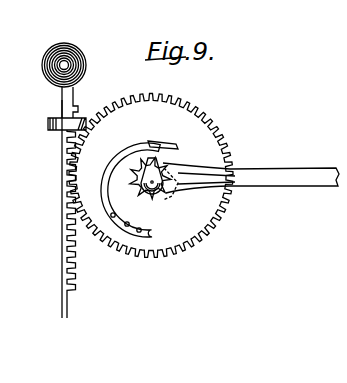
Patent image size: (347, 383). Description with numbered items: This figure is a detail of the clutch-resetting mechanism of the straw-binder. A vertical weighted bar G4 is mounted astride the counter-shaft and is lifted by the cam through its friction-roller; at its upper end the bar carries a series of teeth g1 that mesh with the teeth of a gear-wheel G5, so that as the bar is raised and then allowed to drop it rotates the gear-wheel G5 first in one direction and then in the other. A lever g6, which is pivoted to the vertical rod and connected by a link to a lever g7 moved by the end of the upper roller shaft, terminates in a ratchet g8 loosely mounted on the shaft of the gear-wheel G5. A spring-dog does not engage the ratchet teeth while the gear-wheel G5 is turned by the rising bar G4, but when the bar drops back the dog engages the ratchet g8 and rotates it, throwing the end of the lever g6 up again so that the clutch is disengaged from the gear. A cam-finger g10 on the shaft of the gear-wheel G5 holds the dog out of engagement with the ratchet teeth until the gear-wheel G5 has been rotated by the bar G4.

The vertical weighted bar G4 is at (62, 233).
The series of teeth g1 is at (80, 268).
The gear-wheel G5 is at (151, 176).
The lever g7 is at (136, 149).
The cam-finger g10 is at (166, 152).
The ratchet g8 is at (128, 173).
The lever g6 is at (278, 178).